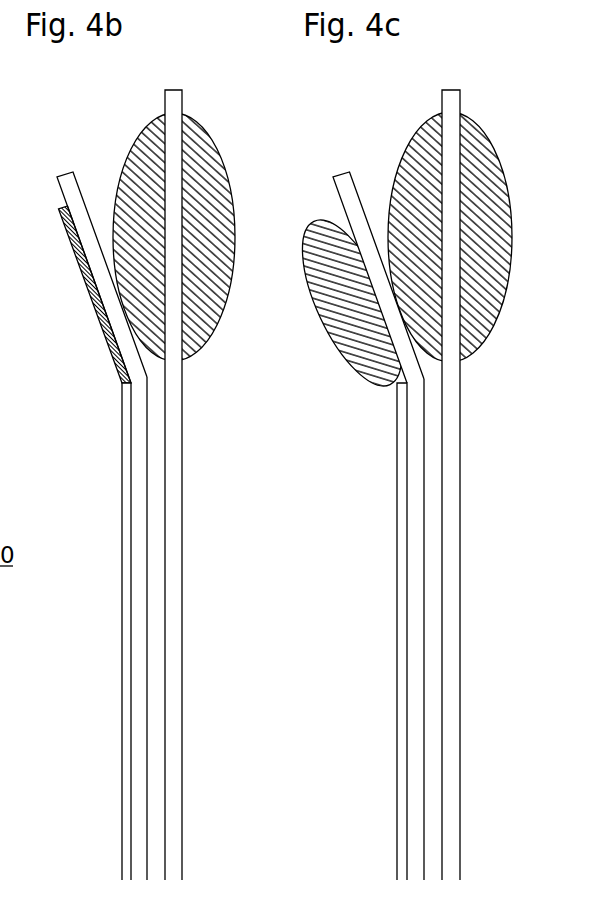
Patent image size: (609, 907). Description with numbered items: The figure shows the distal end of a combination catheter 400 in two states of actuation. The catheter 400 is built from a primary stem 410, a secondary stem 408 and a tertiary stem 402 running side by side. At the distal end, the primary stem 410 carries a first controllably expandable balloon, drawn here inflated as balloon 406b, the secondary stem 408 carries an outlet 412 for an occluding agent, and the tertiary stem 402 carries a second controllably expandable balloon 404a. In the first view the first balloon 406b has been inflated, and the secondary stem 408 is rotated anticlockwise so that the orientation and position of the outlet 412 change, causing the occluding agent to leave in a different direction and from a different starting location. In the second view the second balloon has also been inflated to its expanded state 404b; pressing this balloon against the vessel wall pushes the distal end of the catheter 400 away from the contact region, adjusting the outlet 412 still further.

In FIG. 4b, the catheter 400 is at (217, 515).
In FIG. 4c, the catheter 400 is at (493, 515).
In FIG. 4b, the tertiary stem 402 is at (127, 408).
In FIG. 4c, the tertiary stem 402 is at (400, 410).
In FIG. 4b, the second controllably expandable balloon 404a is at (65, 243).
In FIG. 4c, the second controllably expandable balloon in inflated state 404b is at (317, 242).
In FIG. 4b, the first controllably expandable balloon in inflated state 406b is at (202, 158).
In FIG. 4c, the first controllably expandable balloon in inflated state 406b is at (478, 156).
In FIG. 4b, the secondary stem 408 is at (142, 828).
In FIG. 4c, the secondary stem 408 is at (418, 828).
In FIG. 4b, the primary stem 410 is at (173, 768).
In FIG. 4c, the primary stem 410 is at (449, 768).
In FIG. 4b, the outlet 412 is at (63, 174).
In FIG. 4c, the outlet 412 is at (337, 173).